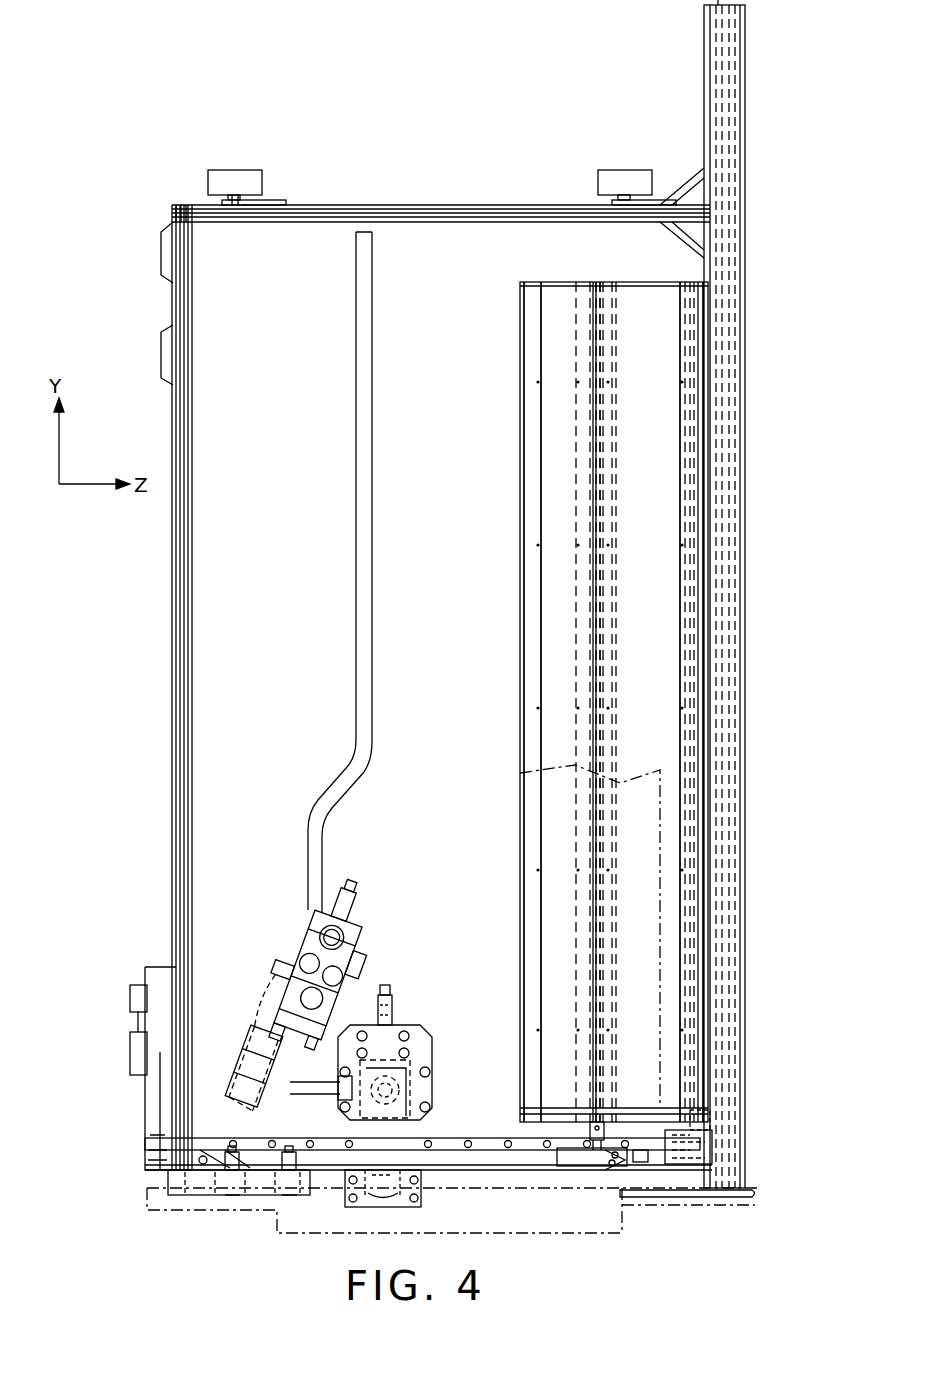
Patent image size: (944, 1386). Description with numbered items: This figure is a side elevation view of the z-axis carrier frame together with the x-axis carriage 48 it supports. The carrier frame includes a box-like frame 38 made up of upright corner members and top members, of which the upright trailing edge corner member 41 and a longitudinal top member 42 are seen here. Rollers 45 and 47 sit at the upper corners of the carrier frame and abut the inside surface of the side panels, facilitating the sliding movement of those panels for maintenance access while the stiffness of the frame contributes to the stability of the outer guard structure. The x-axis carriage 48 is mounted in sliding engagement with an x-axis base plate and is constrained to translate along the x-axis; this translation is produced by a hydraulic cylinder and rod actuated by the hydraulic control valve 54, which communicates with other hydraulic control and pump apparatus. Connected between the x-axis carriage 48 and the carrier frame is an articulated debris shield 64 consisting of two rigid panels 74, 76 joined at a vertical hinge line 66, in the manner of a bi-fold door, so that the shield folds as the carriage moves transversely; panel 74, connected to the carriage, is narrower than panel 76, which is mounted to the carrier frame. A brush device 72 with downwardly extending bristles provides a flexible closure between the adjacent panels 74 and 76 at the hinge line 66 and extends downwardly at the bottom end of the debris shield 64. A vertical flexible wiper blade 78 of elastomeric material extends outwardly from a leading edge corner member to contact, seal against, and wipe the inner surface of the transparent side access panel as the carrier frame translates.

The frame 38 is at (156, 659).
The upright trailing edge corner members 41 is at (180, 550).
The longitudinal top members 42 is at (448, 207).
The roller 45 is at (592, 190).
The roller 47 is at (258, 184).
The x-axis carriage 48 is at (490, 1140).
The hydraulic control valve 54 is at (284, 946).
The articulated debris shield 64 is at (665, 495).
The vertical hinge line 66 is at (600, 414).
The brush device 72 is at (590, 1128).
The articulated panel 74 is at (555, 685).
The articulated panel 76 is at (665, 657).
The vertical flexible wiper blade 78 is at (720, 102).